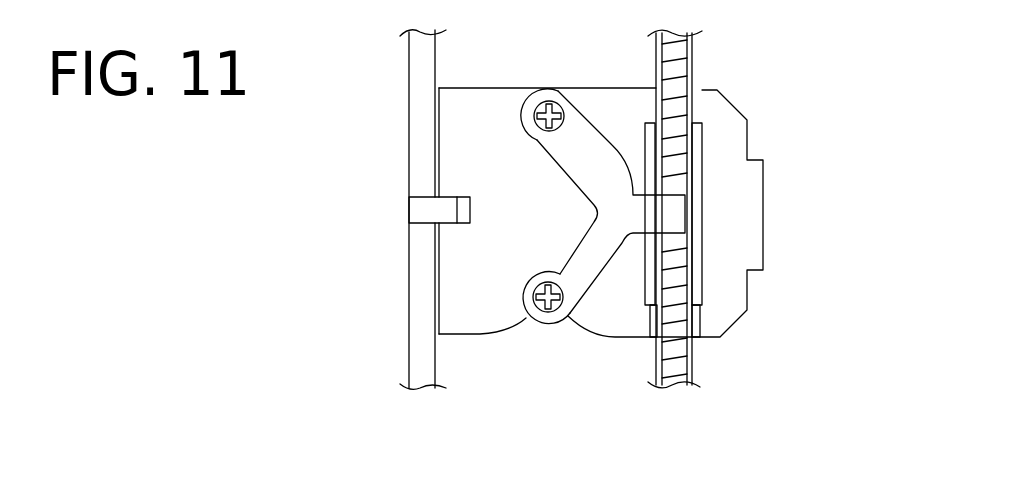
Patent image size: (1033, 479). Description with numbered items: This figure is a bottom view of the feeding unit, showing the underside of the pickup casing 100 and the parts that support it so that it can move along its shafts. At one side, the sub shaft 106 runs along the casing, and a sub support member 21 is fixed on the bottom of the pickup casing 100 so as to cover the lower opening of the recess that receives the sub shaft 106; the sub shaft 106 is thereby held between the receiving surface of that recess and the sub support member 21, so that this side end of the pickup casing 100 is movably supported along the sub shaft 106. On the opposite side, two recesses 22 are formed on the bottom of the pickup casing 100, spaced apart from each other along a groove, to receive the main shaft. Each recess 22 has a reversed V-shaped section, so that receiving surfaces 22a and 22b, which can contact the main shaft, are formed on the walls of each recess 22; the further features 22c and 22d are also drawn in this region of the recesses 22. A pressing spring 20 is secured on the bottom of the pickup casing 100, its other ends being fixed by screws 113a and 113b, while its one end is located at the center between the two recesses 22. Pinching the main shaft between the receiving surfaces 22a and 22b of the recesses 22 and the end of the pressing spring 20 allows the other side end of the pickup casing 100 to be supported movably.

The sub shaft 106 is at (415, 68).
The sub support member 21 is at (415, 212).
The pickup casing 100 is at (735, 293).
The pressing spring 20 is at (598, 300).
The screw 113a is at (540, 92).
The screw 113b is at (527, 320).
The recess 22 is at (702, 135).
The receiving surface 22a is at (700, 108).
The receiving surface 22b is at (650, 113).
The rod lower member 22c is at (697, 337).
The rod lower member 22d is at (655, 340).